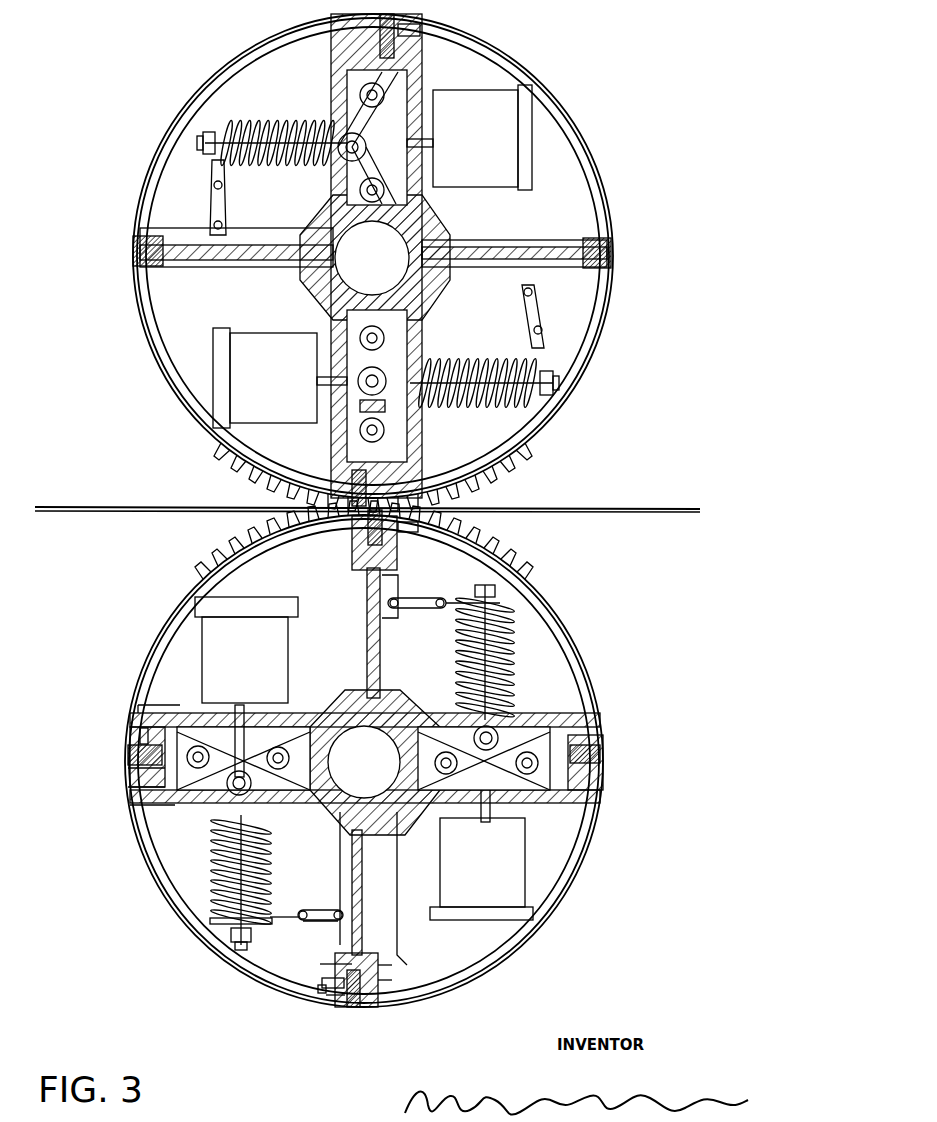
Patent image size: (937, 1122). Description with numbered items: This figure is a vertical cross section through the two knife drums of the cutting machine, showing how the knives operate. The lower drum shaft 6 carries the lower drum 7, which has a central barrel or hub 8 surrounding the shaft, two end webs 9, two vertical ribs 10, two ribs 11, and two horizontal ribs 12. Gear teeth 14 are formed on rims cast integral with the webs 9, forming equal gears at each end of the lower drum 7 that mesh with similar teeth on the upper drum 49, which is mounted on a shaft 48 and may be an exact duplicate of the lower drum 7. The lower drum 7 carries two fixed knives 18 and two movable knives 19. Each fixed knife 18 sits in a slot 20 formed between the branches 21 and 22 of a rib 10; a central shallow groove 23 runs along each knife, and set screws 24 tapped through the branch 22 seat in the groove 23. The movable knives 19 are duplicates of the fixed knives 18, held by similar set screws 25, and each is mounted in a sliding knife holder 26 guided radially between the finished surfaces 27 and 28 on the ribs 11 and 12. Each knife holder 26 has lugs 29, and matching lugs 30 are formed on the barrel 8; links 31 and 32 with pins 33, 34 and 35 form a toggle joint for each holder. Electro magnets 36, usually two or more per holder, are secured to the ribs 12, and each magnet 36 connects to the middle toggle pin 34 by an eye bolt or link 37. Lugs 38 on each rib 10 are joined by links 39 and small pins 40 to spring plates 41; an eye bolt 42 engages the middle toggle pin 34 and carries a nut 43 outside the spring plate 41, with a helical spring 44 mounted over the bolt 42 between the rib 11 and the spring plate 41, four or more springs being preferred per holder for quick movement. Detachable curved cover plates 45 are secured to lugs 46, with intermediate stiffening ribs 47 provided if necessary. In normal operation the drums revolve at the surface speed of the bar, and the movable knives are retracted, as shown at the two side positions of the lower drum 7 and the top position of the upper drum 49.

The lower drum shaft 6 is at (364, 762).
The lower drum 7 is at (373, 888).
The central barrel or hub 8 is at (375, 762).
The end webs 9 is at (440, 950).
The ribs 10 is at (366, 630).
The ribs 11 is at (537, 725).
The ribs 12 is at (190, 715).
The teeth 14 is at (510, 540).
The fixed knives 18 is at (333, 1062).
The movable knives 19 is at (598, 705).
The slot 20 is at (367, 980).
The branch 21 is at (372, 968).
The branch 22 is at (338, 964).
The central shallow groove 23 is at (343, 984).
The set screws 24 is at (345, 992).
The set screws 25 is at (130, 730).
The sliding knife holder 26 is at (125, 768).
The finished surface 27 is at (127, 787).
The finished surface 28 is at (148, 705).
The lugs 29 is at (196, 738).
The lugs 30 is at (430, 740).
The link 31 is at (363, 759).
The link 32 is at (363, 759).
The pin 33 is at (205, 782).
The middle toggle pin 34 is at (242, 745).
The pin 35 is at (283, 746).
The electro magnets 36 is at (125, 625).
The eye bolt or link 37 is at (385, 148).
The lugs 38 is at (340, 912).
The links 39 is at (303, 912).
The small pins 40 is at (313, 937).
The spring plate 41 is at (262, 922).
The eye bolt 42 is at (240, 950).
The nut 43 is at (228, 930).
The helical spring 44 is at (292, 170).
The detachable curved cover plates 45 is at (150, 358).
The lugs 46 is at (148, 275).
The intermediate stiffening ribs 47 is at (232, 77).
The shaft 48 is at (372, 258).
The upper drum 49 is at (375, 256).